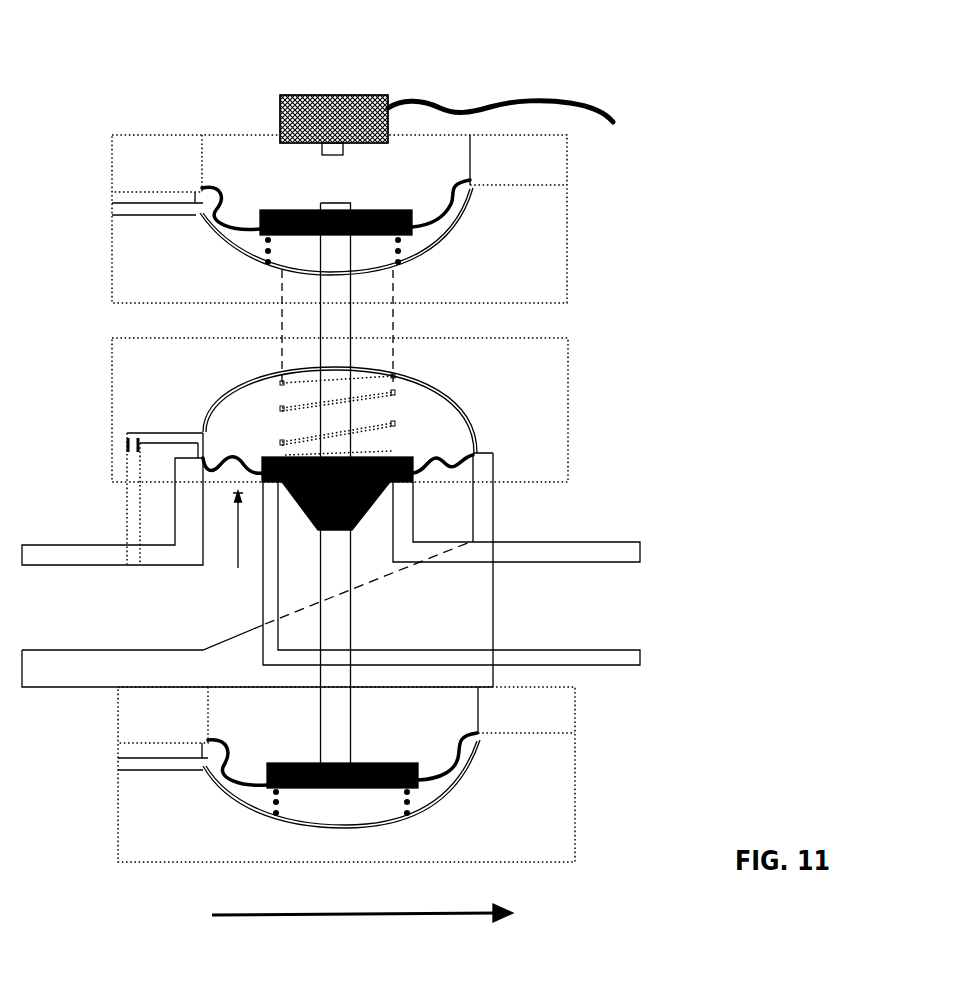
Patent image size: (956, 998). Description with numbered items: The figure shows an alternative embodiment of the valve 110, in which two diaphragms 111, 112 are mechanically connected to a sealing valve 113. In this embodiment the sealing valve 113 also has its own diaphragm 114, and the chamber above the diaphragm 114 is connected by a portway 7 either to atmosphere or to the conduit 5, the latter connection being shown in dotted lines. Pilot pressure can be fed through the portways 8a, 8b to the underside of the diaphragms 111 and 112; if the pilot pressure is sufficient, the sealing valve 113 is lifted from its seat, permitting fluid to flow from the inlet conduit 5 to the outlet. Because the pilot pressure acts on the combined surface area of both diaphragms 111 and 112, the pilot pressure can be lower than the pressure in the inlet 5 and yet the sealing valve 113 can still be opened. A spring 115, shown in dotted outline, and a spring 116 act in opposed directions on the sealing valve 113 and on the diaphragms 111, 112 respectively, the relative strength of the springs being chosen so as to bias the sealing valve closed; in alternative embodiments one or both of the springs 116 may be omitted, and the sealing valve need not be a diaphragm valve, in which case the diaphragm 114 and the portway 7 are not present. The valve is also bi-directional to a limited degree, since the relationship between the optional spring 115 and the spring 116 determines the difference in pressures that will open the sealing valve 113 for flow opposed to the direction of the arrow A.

The valve 110 is at (648, 94).
The diaphragm 111 is at (380, 210).
The diaphragm 112 is at (378, 763).
The sealing valve 113 is at (614, 423).
The diaphragm 114 is at (408, 456).
The spring 115 is at (283, 403).
The spring 116 is at (400, 249).
The portway 8a is at (130, 213).
The portway 8b is at (125, 763).
The portway 7 is at (128, 472).
The conduit 5 is at (217, 628).
The arrow A is at (368, 914).